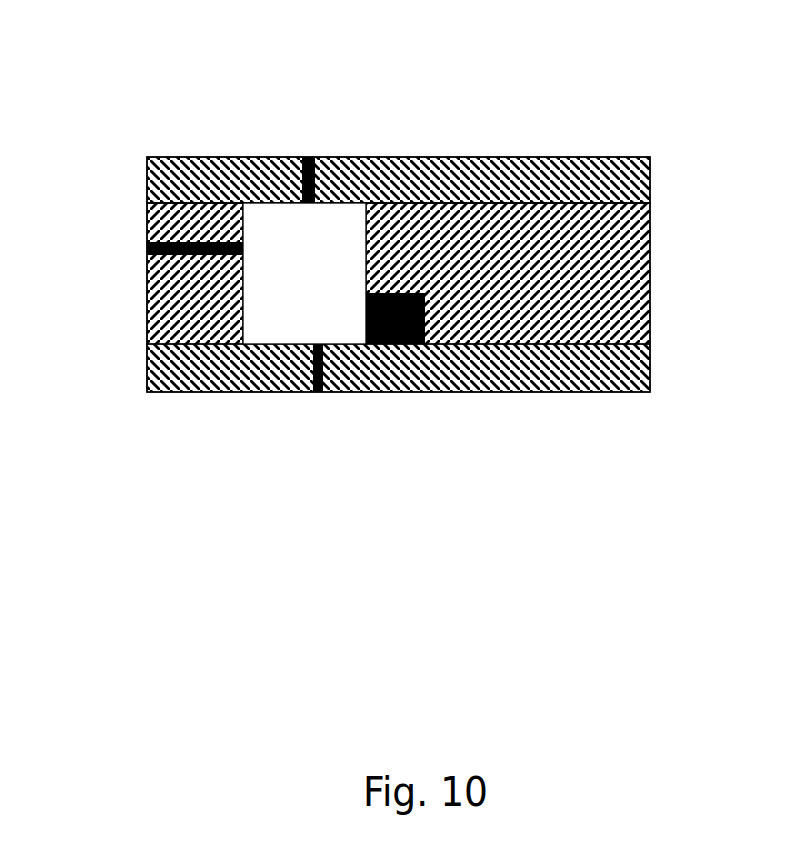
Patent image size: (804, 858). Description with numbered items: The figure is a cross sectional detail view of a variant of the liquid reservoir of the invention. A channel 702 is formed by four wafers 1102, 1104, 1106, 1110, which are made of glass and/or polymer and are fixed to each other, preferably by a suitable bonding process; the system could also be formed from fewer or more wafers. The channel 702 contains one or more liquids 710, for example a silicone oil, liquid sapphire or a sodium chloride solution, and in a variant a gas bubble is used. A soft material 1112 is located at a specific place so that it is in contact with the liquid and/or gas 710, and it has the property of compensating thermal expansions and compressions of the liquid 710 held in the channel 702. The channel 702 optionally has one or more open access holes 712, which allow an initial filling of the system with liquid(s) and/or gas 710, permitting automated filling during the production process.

The channel 702 is at (263, 187).
The open access hole 712 is at (309, 158).
The wafer 1102 is at (475, 157).
The wafer 1106 is at (593, 200).
The wafer 1104 is at (147, 328).
The liquid 710 is at (275, 320).
The soft material 1112 is at (400, 348).
The wafer 1110 is at (547, 393).